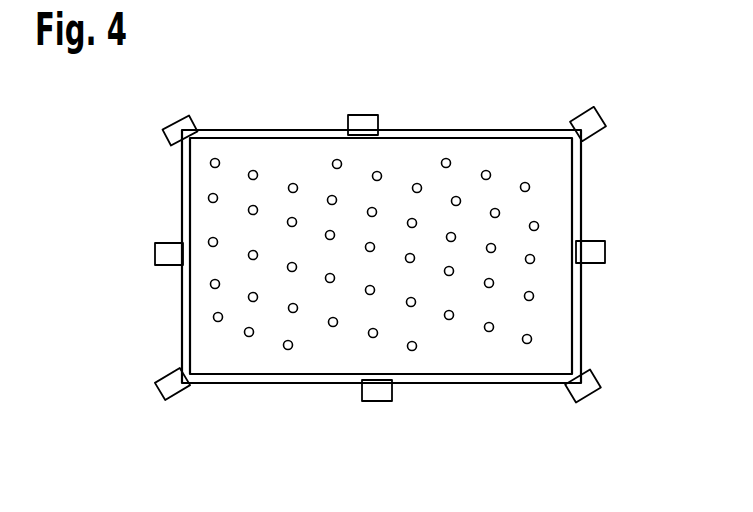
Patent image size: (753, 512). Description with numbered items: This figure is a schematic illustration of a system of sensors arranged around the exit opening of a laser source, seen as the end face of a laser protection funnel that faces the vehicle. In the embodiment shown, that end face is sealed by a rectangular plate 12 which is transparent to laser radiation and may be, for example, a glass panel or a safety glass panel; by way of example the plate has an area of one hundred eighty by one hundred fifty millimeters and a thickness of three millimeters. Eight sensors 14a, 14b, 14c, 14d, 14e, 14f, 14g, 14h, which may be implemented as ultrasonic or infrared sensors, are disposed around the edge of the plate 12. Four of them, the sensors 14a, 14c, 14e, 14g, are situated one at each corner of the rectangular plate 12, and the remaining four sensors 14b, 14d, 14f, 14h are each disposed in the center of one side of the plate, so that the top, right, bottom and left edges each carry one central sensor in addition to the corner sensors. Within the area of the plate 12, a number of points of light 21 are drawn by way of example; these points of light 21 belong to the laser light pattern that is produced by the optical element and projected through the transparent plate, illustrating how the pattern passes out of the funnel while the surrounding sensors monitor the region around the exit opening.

The rectangular plate 12 is at (531, 160).
The sensor 14a is at (178, 128).
The sensor 14b is at (368, 122).
The sensor 14c is at (592, 120).
The sensor 14d is at (598, 252).
The sensor 14e is at (592, 392).
The sensor 14f is at (376, 400).
The sensor 14g is at (173, 390).
The sensor 14h is at (160, 252).
The points of light 21 is at (293, 183).